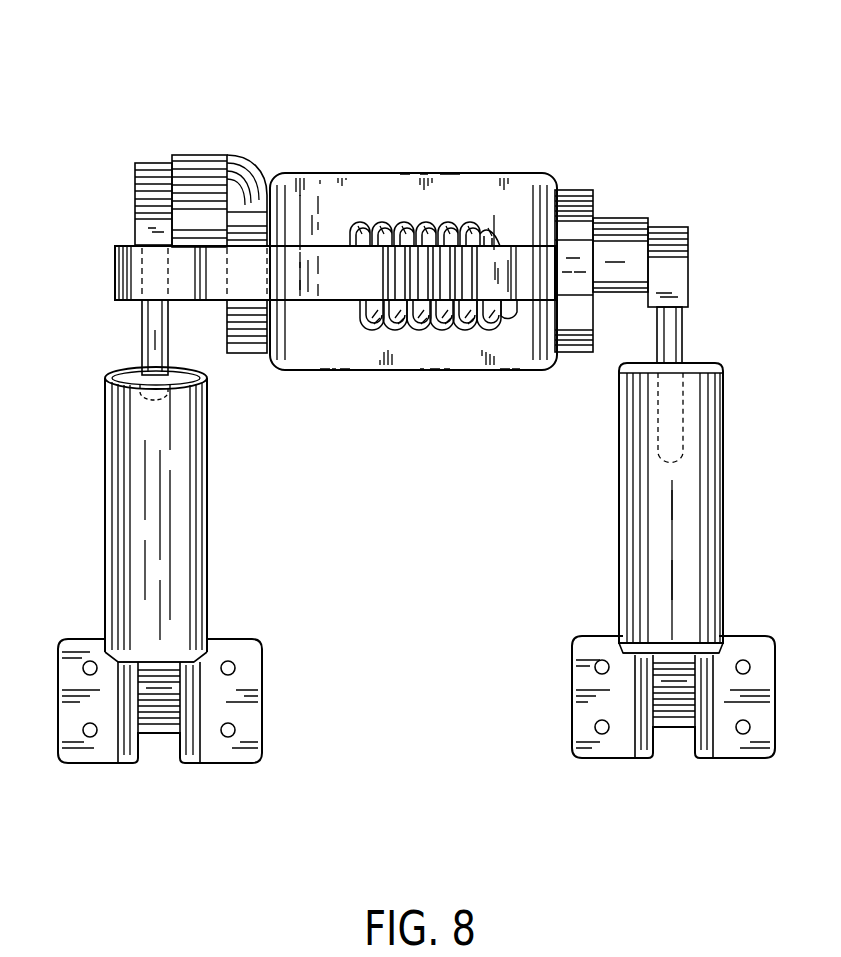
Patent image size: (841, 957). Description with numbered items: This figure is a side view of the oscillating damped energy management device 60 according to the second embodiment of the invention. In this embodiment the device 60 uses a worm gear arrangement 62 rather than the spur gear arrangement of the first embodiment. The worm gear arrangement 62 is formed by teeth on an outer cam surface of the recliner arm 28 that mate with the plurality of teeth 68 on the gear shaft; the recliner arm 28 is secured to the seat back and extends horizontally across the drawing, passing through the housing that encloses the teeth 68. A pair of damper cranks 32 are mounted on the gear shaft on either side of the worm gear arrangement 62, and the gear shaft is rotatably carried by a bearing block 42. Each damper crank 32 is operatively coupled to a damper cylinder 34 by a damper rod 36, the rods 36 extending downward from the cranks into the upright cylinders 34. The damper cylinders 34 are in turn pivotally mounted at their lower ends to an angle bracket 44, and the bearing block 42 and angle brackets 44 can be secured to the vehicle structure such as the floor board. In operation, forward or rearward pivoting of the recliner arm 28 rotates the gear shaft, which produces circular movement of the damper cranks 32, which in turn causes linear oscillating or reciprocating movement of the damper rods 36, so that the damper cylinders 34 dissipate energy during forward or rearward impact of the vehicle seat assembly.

The oscillating damped energy management device 60 is at (224, 93).
The recliner arm 28 is at (367, 287).
The damper crank 32 is at (258, 220).
The damper cylinder 34 is at (138, 518).
The damper rod 36 is at (148, 340).
The bearing block 42 is at (519, 173).
The angle bracket 44 is at (98, 750).
The worm gear arrangement 62 is at (477, 208).
The teeth 68 is at (394, 222).